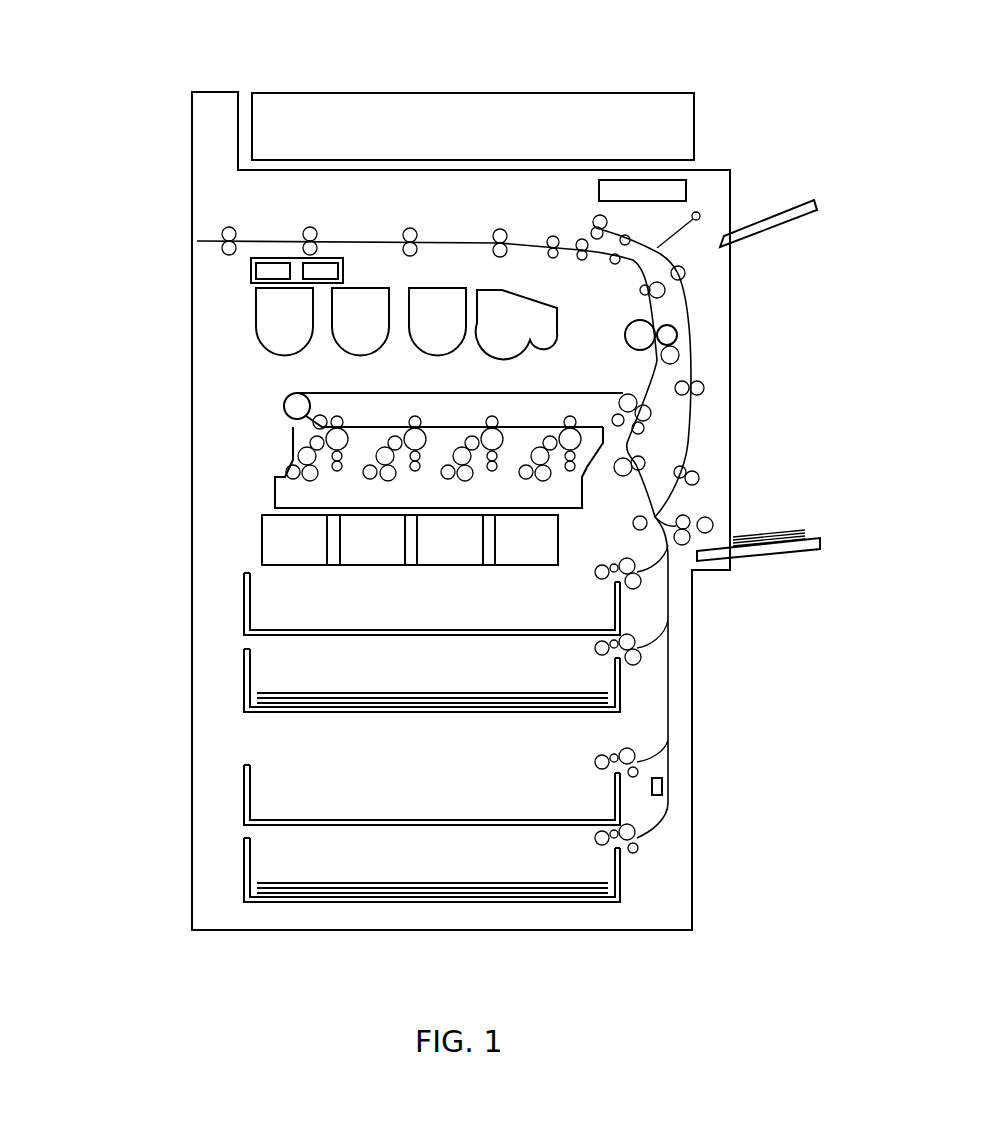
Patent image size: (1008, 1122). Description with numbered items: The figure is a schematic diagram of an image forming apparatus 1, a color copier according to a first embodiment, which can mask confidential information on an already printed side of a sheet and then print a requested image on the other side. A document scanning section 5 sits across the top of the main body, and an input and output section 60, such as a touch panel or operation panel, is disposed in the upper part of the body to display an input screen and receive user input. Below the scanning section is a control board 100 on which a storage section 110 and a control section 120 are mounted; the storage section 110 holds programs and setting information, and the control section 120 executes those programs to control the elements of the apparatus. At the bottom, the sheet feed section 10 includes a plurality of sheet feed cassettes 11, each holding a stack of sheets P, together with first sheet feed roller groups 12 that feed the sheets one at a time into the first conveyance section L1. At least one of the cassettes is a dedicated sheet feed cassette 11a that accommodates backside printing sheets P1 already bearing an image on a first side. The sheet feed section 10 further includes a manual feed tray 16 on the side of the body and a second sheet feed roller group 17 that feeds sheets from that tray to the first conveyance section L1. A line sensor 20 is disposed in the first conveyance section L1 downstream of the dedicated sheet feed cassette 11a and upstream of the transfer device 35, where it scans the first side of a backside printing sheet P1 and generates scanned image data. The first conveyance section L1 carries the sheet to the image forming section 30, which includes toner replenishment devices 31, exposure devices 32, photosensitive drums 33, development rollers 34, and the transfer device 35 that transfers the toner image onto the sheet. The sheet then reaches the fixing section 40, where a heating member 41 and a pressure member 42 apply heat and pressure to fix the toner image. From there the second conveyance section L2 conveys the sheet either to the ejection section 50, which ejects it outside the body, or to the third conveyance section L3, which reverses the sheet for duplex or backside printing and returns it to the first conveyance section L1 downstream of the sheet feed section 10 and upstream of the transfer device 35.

The image forming apparatus 1 is at (652, 65).
The document scanning section 5 is at (454, 88).
The sheet feed section 10 is at (462, 702).
The sheet feed cassette 11 is at (244, 598).
The dedicated sheet feed cassette 11a is at (244, 872).
The first sheet feed roller group 12 is at (587, 575).
The manual feed tray 16 is at (783, 557).
The second sheet feed roller group 17 is at (692, 508).
The line sensor 20 is at (662, 785).
The image forming section 30 is at (371, 428).
The toner replenishment device 31 is at (245, 335).
The exposure device 32 is at (268, 533).
The photosensitive drum 33 is at (343, 448).
The development roller 34 is at (313, 443).
The transfer device 35 is at (273, 407).
The fixing section 40 is at (680, 320).
The heating member 41 is at (627, 338).
The pressure member 42 is at (677, 333).
The ejection section 50 is at (389, 257).
The input and output section 60 is at (687, 183).
The control board 100 is at (276, 272).
The storage section 110 is at (252, 273).
The control section 120 is at (343, 270).
The first conveyance section L1 is at (677, 585).
The second conveyance section L2 is at (270, 237).
The third conveyance section L3 is at (713, 417).
The sheet P is at (277, 692).
The backside printing sheet P1 is at (758, 532).